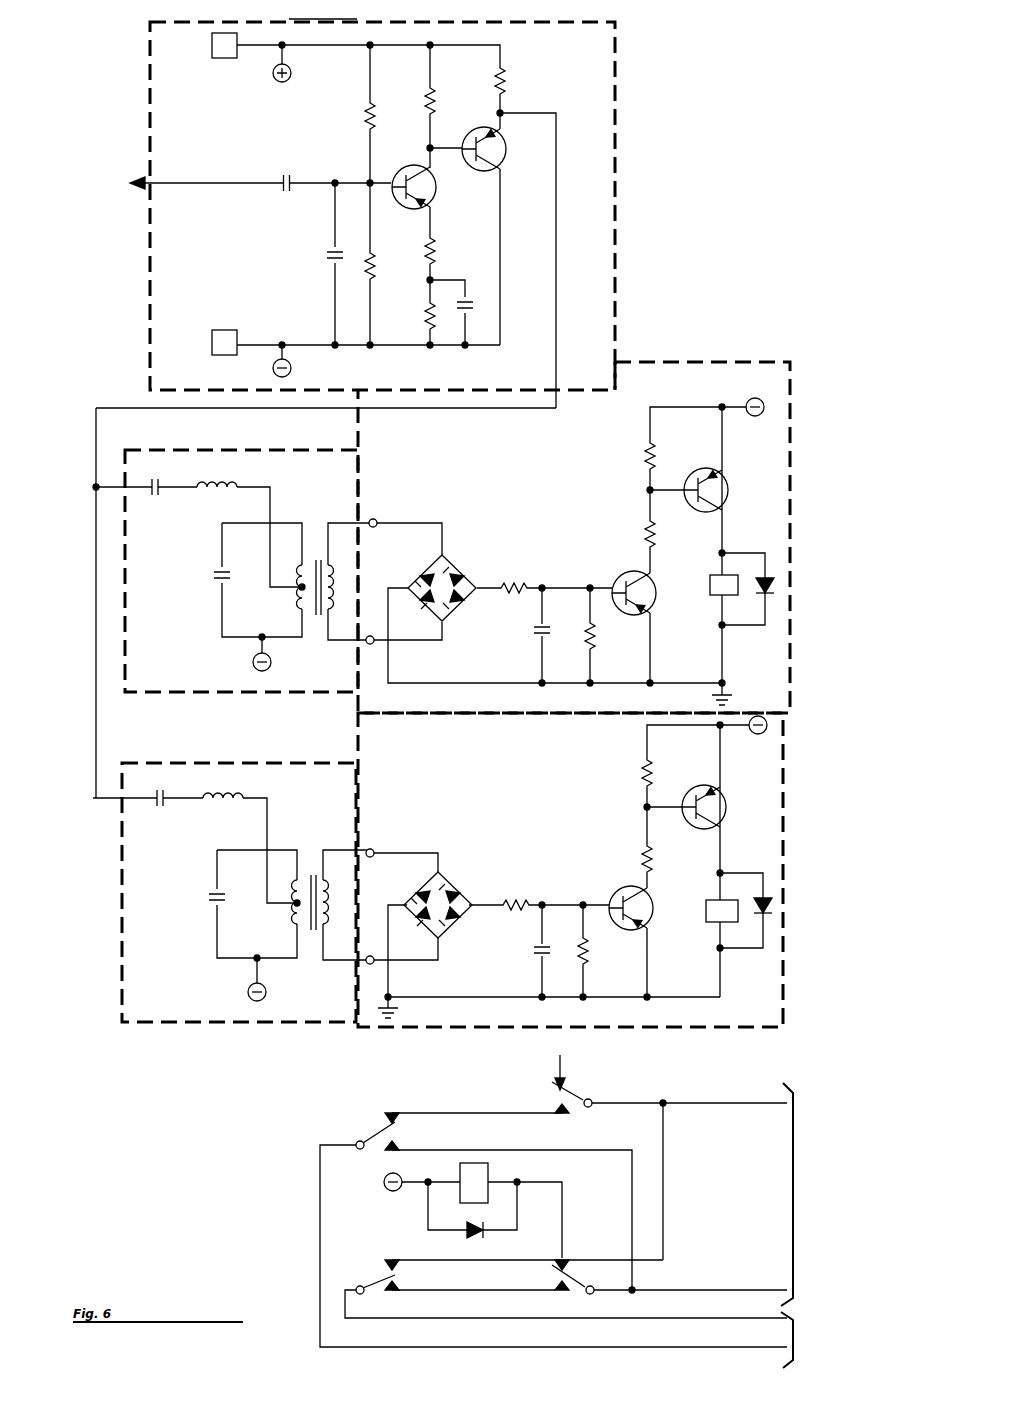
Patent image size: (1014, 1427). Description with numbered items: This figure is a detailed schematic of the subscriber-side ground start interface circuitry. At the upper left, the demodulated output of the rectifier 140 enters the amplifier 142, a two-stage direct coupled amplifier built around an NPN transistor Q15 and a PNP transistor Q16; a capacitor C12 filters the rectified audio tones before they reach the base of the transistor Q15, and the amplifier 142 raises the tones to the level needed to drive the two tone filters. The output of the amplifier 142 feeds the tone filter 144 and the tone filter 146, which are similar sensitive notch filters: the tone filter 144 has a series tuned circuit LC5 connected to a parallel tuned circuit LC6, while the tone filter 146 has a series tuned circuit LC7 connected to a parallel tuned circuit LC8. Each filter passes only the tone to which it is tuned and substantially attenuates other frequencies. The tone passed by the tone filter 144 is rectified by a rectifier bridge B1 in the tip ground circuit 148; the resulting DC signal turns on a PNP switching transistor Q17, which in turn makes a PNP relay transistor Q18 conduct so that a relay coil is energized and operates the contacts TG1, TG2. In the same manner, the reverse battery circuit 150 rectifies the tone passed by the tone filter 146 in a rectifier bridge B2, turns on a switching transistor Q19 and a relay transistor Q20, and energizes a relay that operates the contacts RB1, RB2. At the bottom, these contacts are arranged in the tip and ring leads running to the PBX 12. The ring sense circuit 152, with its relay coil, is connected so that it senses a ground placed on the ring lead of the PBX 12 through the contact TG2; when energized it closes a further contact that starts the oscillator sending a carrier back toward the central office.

The rectifier 140 is at (153, 182).
The amplifier 142 is at (425, 206).
The tone filter 144 is at (235, 574).
The tone filter 146 is at (233, 903).
The tip ground circuit 148 is at (616, 526).
The reverse battery circuit 150 is at (621, 870).
The ring sense circuit 152 is at (437, 1194).
The PBX subscriber terminal 12 is at (819, 1225).
The NPN transistor Q15 is at (435, 200).
The PNP transistor Q16 is at (497, 170).
The PNP switching transistor Q17 is at (625, 571).
The PNP relay transistor Q18 is at (731, 479).
The switching transistor Q19 is at (614, 895).
The relay transistor Q20 is at (727, 799).
The capacitor C12 is at (328, 257).
The series tuned circuit LC5 is at (225, 491).
The parallel tuned circuit LC6 is at (292, 597).
The series tuned circuit LC7 is at (230, 804).
The parallel tuned circuit LC8 is at (295, 912).
The rectifier bridge B1 is at (457, 571).
The diode bridge B2 is at (457, 886).
The tip ground relay contact TG1 is at (669, 1111).
The tip ground relay contact TG2 is at (669, 1287).
The reverse battery relay contact RB1 is at (553, 1219).
The reverse battery relay contact RB2 is at (566, 1289).